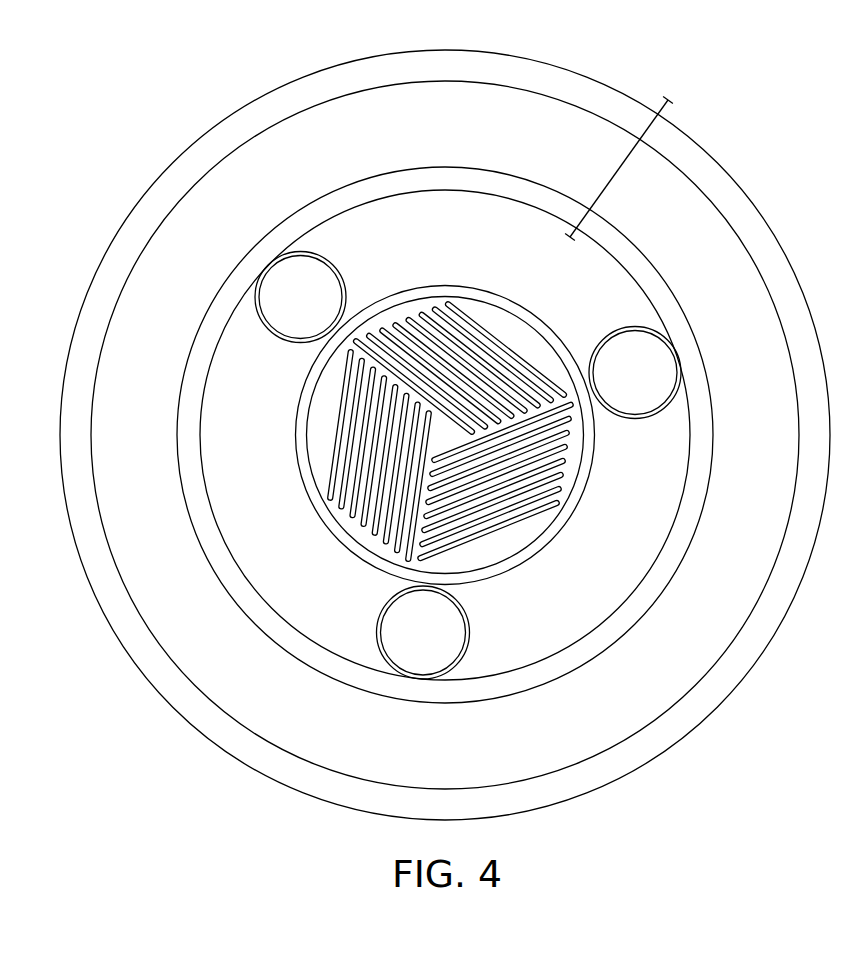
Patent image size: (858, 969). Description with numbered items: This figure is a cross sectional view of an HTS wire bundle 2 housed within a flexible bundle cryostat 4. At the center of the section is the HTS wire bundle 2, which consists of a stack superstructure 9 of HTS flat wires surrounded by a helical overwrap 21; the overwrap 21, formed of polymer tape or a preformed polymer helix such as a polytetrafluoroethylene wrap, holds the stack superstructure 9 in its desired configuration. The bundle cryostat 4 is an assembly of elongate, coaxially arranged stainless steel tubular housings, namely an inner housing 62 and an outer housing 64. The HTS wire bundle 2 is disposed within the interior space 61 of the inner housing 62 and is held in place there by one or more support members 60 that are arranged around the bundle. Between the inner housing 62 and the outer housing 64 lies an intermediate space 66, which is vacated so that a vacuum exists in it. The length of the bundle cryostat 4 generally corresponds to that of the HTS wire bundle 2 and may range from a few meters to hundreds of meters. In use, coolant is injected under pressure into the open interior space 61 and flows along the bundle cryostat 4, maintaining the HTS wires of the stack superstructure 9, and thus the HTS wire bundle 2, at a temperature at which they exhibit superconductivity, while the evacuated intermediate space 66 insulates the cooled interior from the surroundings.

The HTS wire bundle 2 is at (440, 266).
The bundle cryostat 4 is at (615, 170).
The stack superstructure 9 is at (510, 547).
The overwrap 21 is at (540, 317).
The support member 60 is at (334, 267).
The interior space 61 is at (537, 270).
The inner housing 62 is at (481, 167).
The outer housing 64 is at (580, 70).
The intermediate space 66 is at (713, 271).